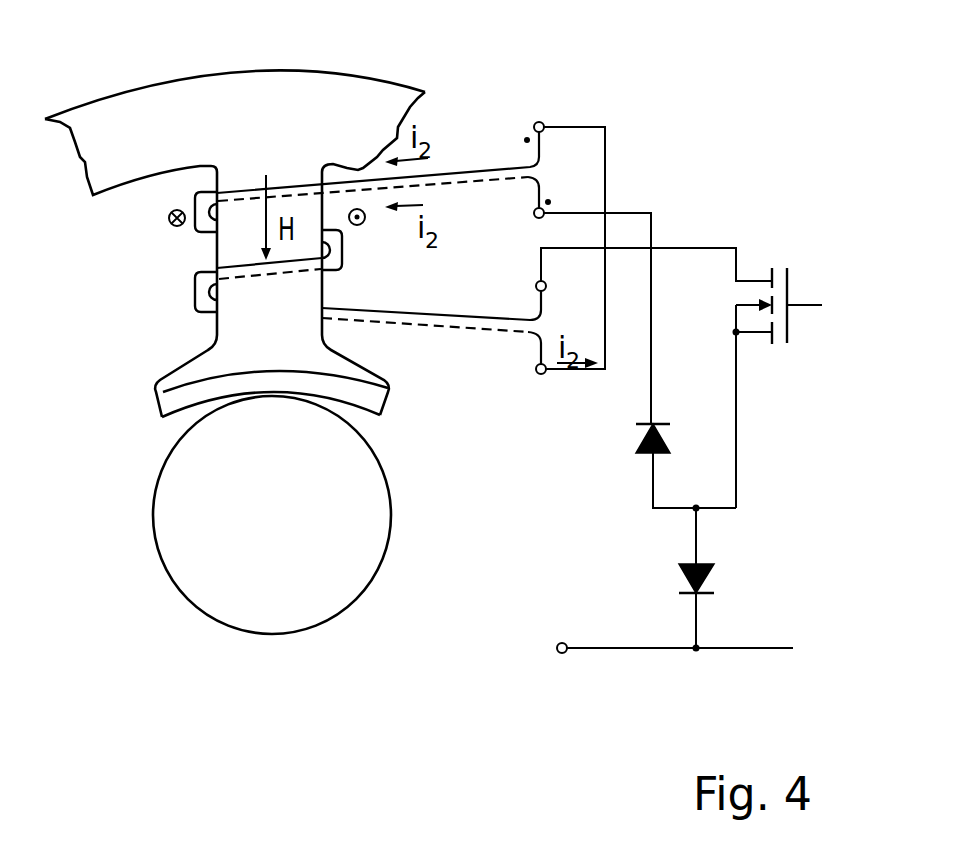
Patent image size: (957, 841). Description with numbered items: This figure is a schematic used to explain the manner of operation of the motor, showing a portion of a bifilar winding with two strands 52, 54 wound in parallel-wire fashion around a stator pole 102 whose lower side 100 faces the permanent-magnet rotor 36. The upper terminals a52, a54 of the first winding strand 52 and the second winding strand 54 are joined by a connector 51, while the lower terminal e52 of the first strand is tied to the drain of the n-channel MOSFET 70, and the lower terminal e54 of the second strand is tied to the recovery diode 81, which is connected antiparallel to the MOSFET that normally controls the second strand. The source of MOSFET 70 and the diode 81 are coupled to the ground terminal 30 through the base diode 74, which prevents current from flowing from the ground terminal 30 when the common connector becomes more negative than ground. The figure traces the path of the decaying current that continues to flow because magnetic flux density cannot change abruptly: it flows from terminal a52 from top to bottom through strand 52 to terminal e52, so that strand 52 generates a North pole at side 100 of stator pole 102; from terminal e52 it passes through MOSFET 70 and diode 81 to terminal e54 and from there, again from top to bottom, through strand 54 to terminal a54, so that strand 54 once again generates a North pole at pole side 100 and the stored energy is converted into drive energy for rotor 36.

The ground terminal 30 is at (565, 643).
The rotor 36 is at (372, 590).
The connector 51 is at (605, 170).
The first winding strand 52 is at (232, 188).
The second winding strand 54 is at (217, 283).
The n-channel MOSFET 70 is at (787, 325).
The base diode 74 is at (712, 580).
The recovery diode 81 is at (637, 453).
The lower side of stator pole 100 is at (191, 400).
The stator pole 102 is at (217, 250).
The upper terminal of strand 52 a52 is at (540, 122).
The lower terminal of strand 52 e52 is at (536, 286).
The upper terminal of strand 54 a54 is at (541, 374).
The lower terminal of strand 54 e54 is at (534, 213).